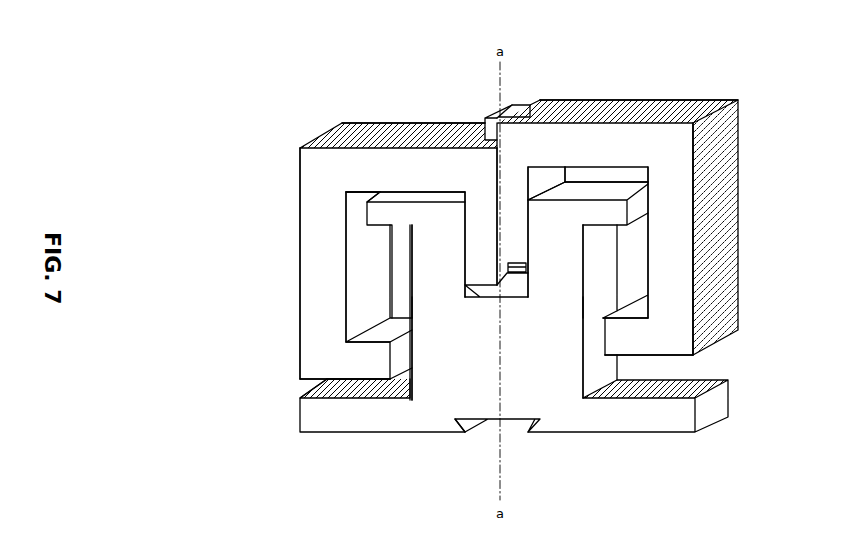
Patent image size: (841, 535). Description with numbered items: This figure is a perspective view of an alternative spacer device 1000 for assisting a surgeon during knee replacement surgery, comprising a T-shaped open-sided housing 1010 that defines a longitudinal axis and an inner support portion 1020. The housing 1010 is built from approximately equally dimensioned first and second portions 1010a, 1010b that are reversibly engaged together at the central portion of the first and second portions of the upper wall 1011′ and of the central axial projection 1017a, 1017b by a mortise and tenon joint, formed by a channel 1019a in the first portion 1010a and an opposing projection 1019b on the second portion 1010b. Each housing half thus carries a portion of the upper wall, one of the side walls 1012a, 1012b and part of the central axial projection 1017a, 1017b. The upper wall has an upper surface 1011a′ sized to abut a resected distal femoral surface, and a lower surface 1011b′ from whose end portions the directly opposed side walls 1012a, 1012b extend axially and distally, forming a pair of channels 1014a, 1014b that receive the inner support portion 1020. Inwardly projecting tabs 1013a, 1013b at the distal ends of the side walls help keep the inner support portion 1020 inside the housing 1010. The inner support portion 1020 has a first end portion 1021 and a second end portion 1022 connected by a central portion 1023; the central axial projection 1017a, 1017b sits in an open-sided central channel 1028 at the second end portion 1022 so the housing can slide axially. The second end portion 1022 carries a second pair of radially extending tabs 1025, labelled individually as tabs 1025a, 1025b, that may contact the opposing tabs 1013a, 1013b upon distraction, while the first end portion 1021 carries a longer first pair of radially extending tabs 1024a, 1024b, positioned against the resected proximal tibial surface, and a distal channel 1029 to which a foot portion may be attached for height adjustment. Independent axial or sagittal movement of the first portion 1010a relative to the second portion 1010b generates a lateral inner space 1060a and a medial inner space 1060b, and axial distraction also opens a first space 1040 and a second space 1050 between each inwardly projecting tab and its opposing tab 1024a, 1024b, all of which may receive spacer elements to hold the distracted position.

The spacer device 1000 is at (216, 103).
The housing 1010 is at (712, 78).
The first portion of housing 1010a is at (322, 138).
The second portion of housing 1010b is at (700, 112).
The first portion of upper wall 1011′ is at (397, 172).
The first upper surface 1011a′ is at (368, 130).
The first lower surface 1011b′ is at (448, 172).
The side wall 1012a is at (312, 233).
The side wall 1012b is at (672, 236).
The inwardly projecting tab 1013a is at (342, 362).
The inwardly projecting tab 1013b is at (632, 343).
The channel 1014a is at (480, 263).
The channel 1014b is at (523, 255).
The central axial projection portion 1017a is at (405, 272).
The central axial projection portion 1017b is at (640, 314).
The channel 1019a is at (478, 118).
The projection 1019b is at (518, 105).
The second end portion 1022 is at (567, 218).
The central portion 1023 is at (613, 245).
The radially extending tab 1025a is at (377, 217).
The radially extending tab 1025b is at (612, 213).
The lateral inner space 1060a is at (350, 196).
The medial inner space 1060b is at (630, 176).
The inner support portion 1020 is at (712, 443).
The radially extending tab 1024a is at (318, 418).
The radially extending tab 1024b is at (688, 414).
The first space 1040 is at (300, 388).
The second space 1050 is at (722, 365).
The first end portion 1021 is at (448, 395).
The open-sided central channel 1028 is at (468, 300).
The distal channel 1029 is at (492, 420).
The post portion of base 1025 is at (547, 343).